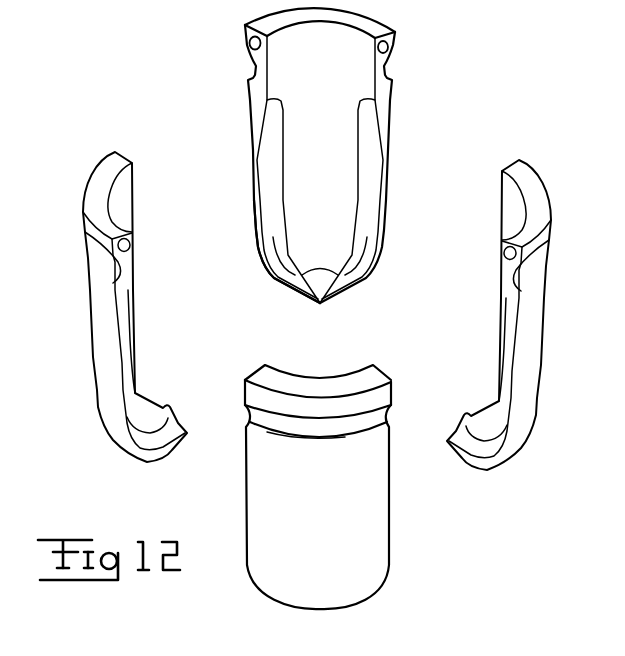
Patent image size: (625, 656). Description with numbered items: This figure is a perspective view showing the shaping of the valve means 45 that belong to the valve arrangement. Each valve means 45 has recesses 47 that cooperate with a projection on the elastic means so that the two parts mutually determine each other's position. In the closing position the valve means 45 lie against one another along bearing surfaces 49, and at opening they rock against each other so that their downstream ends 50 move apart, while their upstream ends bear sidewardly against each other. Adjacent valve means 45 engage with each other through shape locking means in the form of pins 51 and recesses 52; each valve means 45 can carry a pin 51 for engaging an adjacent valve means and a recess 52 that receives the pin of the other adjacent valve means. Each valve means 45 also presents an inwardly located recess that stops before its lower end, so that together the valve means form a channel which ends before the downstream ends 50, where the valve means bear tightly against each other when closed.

The valve means 45 is at (343, 87).
The recesses 47 is at (109, 262).
The bearing surfaces 49 is at (253, 218).
The ends 50 is at (337, 283).
The projections/pins 51 is at (251, 43).
The recesses 52 is at (387, 46).